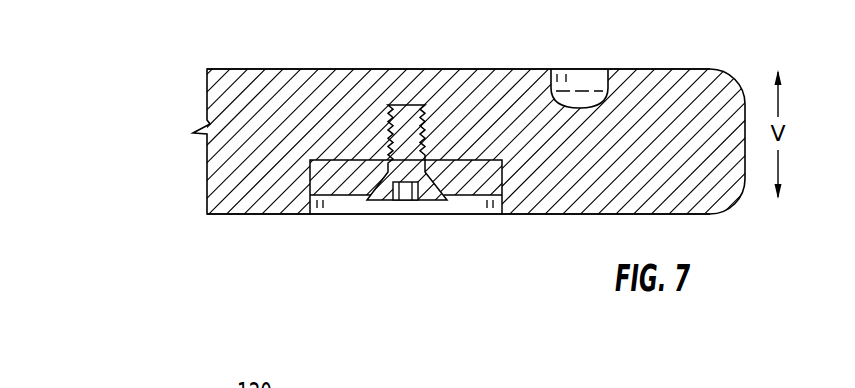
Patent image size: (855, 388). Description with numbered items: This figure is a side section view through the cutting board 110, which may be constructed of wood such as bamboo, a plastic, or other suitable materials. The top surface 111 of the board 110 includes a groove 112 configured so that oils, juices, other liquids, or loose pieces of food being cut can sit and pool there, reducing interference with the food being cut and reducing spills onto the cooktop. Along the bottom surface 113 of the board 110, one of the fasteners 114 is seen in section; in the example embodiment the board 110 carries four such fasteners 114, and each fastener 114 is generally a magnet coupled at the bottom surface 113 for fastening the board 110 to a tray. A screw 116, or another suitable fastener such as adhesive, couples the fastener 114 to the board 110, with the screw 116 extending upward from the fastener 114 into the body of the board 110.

The board 110 is at (152, 80).
The top surface 111 is at (323, 69).
The groove 112 is at (588, 70).
The bottom surface 113 is at (245, 214).
The fastener 114 is at (470, 188).
The screw 116 is at (406, 186).